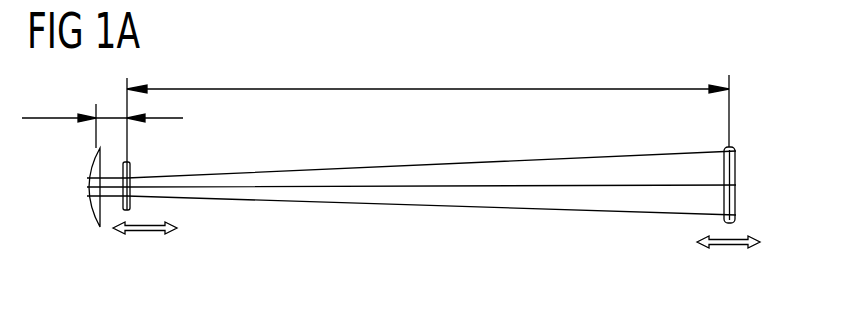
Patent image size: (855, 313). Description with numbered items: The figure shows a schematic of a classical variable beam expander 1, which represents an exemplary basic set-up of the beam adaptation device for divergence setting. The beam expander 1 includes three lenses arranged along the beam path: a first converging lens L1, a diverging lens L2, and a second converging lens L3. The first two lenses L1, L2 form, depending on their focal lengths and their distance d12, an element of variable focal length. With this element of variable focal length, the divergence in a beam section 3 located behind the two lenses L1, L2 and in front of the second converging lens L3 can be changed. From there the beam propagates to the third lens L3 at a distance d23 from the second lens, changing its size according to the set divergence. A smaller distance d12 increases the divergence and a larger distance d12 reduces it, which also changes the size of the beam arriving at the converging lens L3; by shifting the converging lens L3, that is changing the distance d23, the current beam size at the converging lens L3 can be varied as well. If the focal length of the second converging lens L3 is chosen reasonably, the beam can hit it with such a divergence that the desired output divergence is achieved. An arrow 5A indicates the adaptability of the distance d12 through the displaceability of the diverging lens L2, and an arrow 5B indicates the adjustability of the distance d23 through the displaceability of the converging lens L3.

The variable beam expander 1 is at (575, 242).
The beam section 3 is at (553, 136).
The arrow 5A is at (148, 235).
The arrow 5B is at (728, 249).
The first converging lens L1 is at (91, 200).
The diverging lens L2 is at (131, 164).
The second converging lens L3 is at (737, 167).
The distance d12 is at (102, 114).
The distance d23 is at (428, 108).